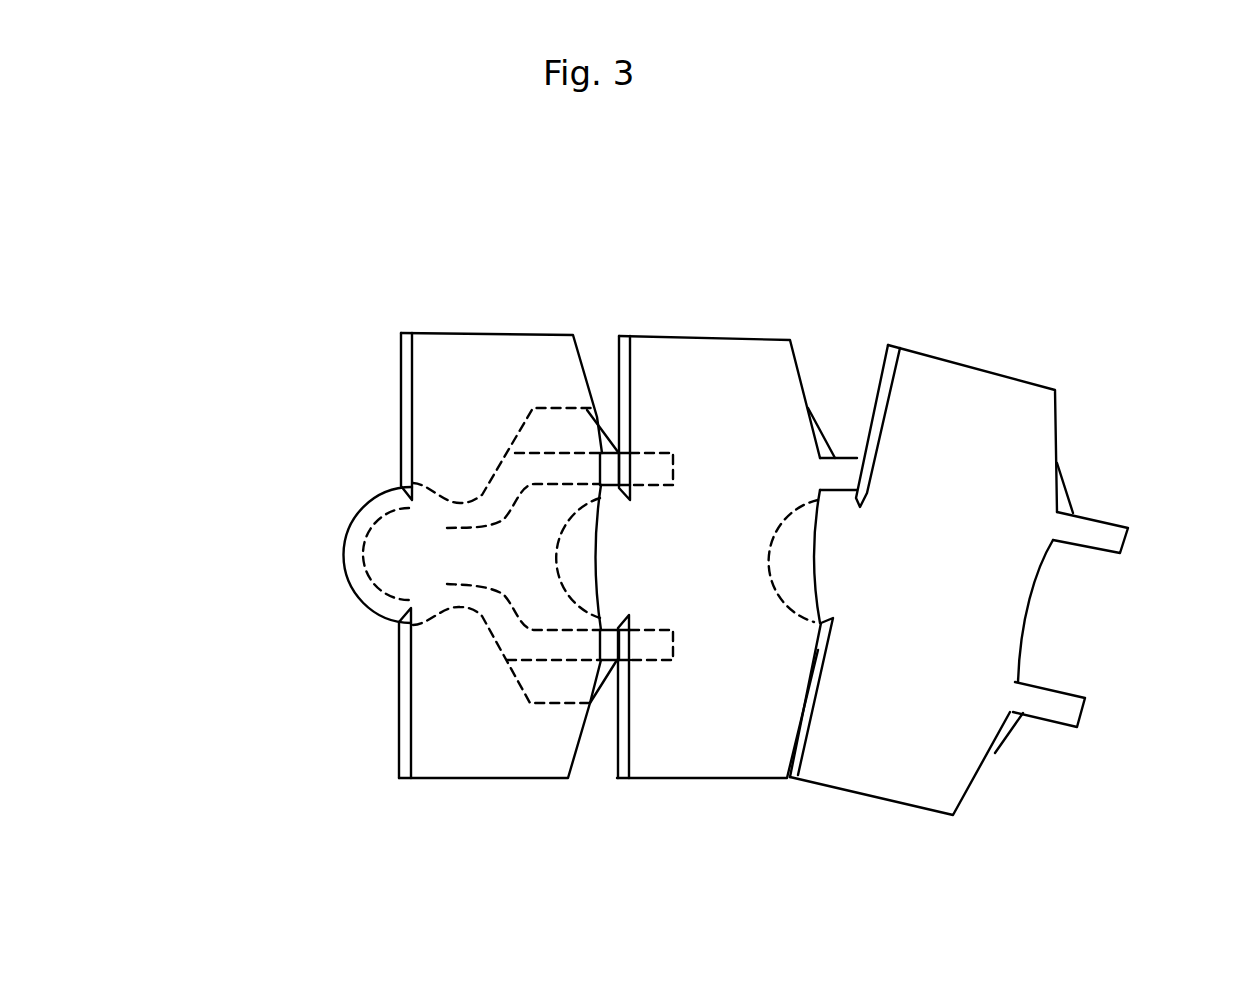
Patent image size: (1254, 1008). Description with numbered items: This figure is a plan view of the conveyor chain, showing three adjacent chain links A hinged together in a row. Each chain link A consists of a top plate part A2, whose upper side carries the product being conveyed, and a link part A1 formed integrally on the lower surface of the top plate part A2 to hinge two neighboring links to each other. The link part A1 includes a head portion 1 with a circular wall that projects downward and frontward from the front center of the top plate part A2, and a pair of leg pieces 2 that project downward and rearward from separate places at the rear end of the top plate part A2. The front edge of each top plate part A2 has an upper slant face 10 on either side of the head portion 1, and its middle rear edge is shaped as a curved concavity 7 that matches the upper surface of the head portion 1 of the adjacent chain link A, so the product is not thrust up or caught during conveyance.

The head portion 1 is at (352, 560).
The leg pieces 2 is at (643, 453).
The curved concavity 7 is at (1027, 602).
The upper slant face 10 is at (408, 370).
The chain link A is at (453, 333).
The link part A1 is at (360, 503).
The top plate part A2 is at (545, 362).